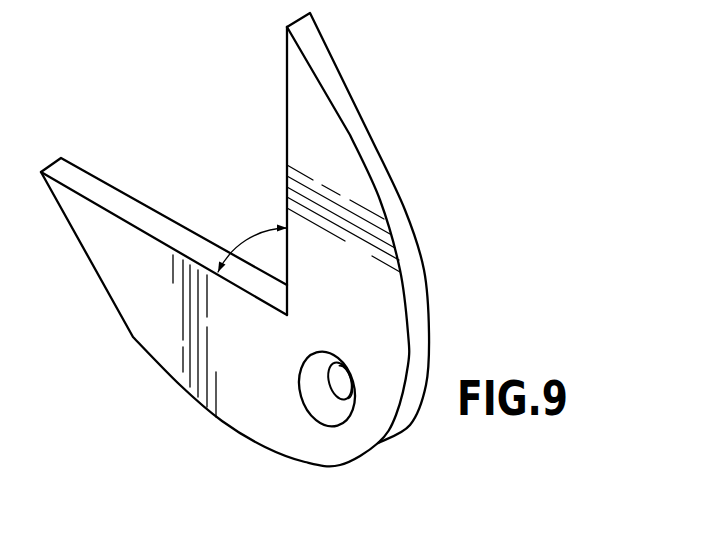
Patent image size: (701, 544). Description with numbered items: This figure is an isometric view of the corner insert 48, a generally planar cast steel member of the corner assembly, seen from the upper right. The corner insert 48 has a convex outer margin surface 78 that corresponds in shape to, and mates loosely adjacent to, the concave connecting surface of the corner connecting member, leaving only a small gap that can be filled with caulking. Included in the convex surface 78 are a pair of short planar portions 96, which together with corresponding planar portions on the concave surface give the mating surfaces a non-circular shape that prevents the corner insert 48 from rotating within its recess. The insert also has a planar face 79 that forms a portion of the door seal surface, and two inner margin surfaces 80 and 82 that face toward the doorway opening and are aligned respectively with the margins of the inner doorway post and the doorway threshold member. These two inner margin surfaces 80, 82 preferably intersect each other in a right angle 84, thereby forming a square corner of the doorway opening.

The corner insert 48 is at (436, 190).
The convex outer margin surface 78 is at (372, 142).
The inner margin surface 80 is at (287, 94).
The inner margin surface 82 is at (118, 200).
The right angle 84 is at (253, 233).
The planar face 79 is at (160, 318).
The short planar portions 96 is at (420, 327).